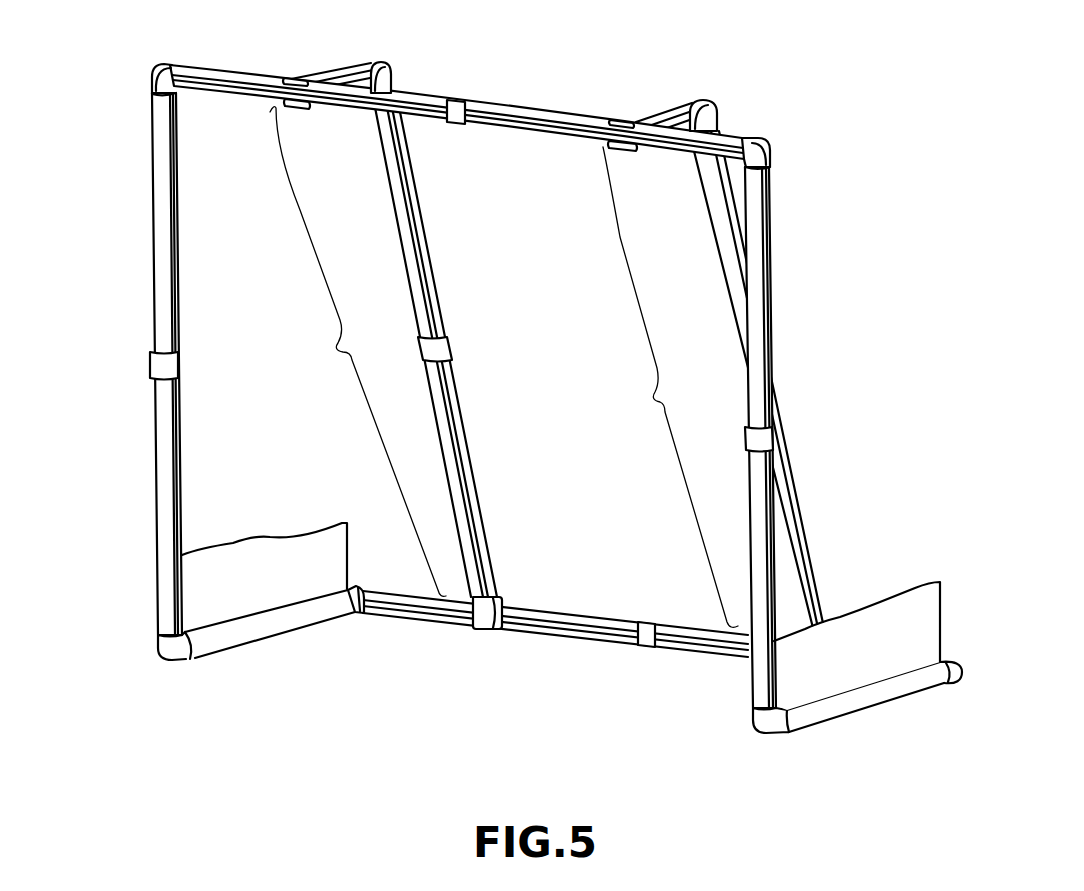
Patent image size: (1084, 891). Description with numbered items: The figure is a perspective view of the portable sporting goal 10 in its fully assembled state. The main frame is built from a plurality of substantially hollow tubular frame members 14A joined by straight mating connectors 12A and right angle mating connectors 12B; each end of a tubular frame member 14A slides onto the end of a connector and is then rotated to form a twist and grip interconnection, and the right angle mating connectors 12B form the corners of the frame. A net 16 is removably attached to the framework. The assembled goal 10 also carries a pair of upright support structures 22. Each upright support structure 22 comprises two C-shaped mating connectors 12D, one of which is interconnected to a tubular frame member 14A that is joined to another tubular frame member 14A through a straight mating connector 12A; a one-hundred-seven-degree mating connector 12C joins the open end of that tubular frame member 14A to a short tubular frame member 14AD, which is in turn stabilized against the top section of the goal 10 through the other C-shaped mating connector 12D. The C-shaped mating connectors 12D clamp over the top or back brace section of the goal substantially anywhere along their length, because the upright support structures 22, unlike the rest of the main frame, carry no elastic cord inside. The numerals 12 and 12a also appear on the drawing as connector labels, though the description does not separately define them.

The portable sporting goal 10 is at (500, 688).
The tubular coupling 12 is at (442, 345).
The straight coupling 12a is at (458, 100).
The straight mating connector 12A is at (154, 365).
The right angle mating connector 12B is at (165, 64).
The 107-degree mating connector 12C is at (390, 68).
The C-shaped mating connector 12D is at (295, 78).
The tubular frame member 14A is at (152, 211).
The short tubular frame member 14AD is at (338, 66).
The net 16 is at (292, 550).
The upright support structure 22 is at (504, 367).